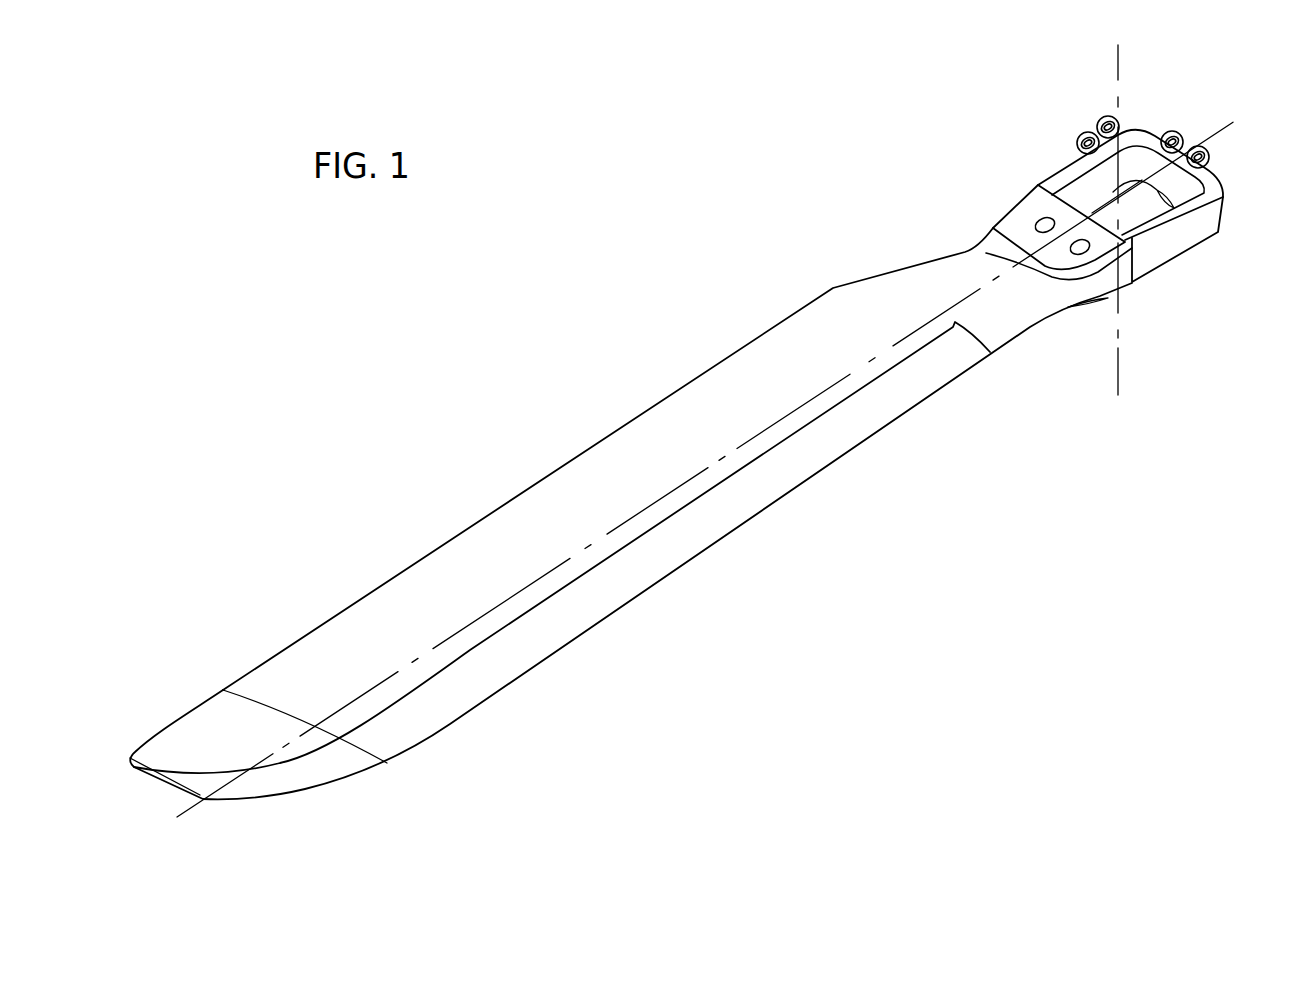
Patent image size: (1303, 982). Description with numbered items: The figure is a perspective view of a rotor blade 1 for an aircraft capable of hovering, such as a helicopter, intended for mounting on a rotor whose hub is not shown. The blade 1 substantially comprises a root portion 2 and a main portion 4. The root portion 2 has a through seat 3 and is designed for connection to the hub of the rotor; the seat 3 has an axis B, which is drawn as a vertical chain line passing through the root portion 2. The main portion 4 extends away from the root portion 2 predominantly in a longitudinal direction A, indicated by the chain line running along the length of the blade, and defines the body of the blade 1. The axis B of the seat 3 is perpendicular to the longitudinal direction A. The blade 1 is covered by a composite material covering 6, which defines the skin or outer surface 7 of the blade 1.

The blade 1 is at (693, 605).
The root portion 2 is at (1150, 128).
The through seat 3 is at (1158, 170).
The main portion 4 is at (752, 368).
The composite material covering 6 is at (465, 565).
The outer surface 7 is at (608, 456).
The longitudinal direction A is at (1222, 128).
The axis B is at (1118, 63).